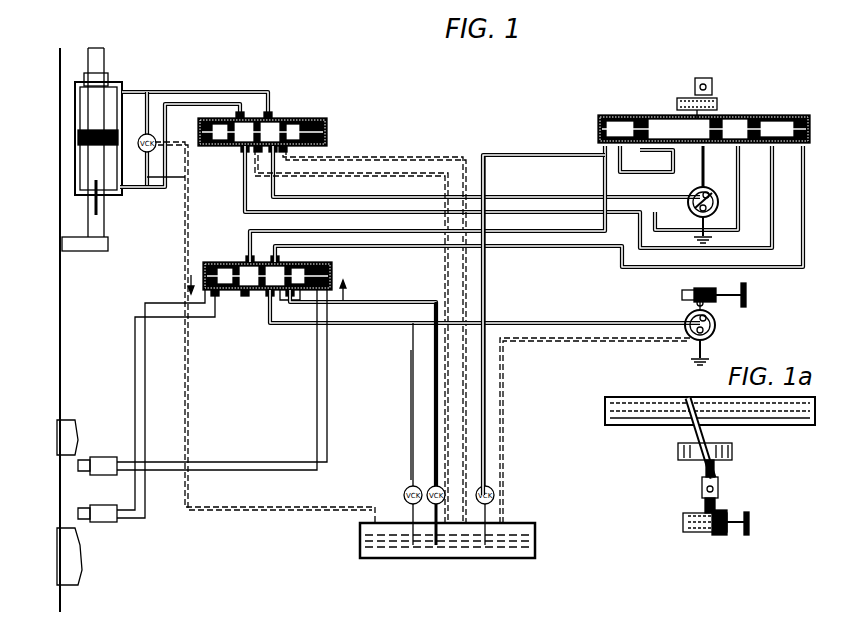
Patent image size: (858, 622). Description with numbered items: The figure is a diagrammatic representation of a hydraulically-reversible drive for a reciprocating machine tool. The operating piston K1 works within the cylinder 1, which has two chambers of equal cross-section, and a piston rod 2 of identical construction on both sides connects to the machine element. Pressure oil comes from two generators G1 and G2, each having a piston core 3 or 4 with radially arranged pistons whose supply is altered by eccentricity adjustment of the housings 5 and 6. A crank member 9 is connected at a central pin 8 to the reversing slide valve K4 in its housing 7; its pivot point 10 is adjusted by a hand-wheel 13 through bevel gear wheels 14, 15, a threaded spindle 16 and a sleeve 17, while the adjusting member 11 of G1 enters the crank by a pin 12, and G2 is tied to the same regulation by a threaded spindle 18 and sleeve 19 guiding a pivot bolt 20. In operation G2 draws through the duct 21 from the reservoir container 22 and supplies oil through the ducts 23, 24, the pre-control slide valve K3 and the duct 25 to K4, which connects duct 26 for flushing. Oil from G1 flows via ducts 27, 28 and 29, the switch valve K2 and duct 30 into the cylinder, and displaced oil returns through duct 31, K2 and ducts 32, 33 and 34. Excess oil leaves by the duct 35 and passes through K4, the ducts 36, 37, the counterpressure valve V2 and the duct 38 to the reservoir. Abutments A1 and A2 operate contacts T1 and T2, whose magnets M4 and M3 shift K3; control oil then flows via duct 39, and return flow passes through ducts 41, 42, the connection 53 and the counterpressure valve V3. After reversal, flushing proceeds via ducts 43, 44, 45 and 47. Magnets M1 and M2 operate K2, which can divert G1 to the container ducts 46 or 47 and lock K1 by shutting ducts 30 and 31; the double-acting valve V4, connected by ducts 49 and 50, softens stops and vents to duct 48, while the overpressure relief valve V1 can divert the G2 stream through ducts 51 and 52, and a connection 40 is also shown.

In FIG. 1, the cylinder 1 is at (112, 195).
In FIG. 1, the piston rod 2 is at (104, 60).
In FIG. 1, the piston core 3 is at (712, 196).
In FIG. 1, the piston core 4 is at (716, 325).
In FIG. 1, the generator housing 5 is at (715, 208).
In FIG. 1, the generator housing 6 is at (712, 335).
In FIG. 1, the valve housing 7 is at (790, 118).
In FIG. 1A, the valve housing 7 is at (800, 425).
In FIG. 1, the central pin 8 is at (677, 100).
In FIG. 1A, the central pin 8 is at (690, 402).
In FIG. 1, the crank member 9 is at (718, 105).
In FIG. 1A, the crank member 9 is at (696, 430).
In FIG. 1A, the pivot point 10 is at (718, 488).
In FIG. 1A, the adjusting member 11 is at (732, 452).
In FIG. 1A, the pin 12 is at (712, 442).
In FIG. 1, the hand-wheel 13 is at (746, 294).
In FIG. 1A, the hand-wheel 13 is at (749, 518).
In FIG. 1, the bevel gear wheel 14 is at (726, 300).
In FIG. 1A, the bevel gear wheel 14 is at (733, 532).
In FIG. 1, the bevel gear wheel 15 is at (716, 290).
In FIG. 1A, the bevel gear wheel 15 is at (705, 507).
In FIG. 1, the threaded spindle 16 is at (700, 78).
In FIG. 1A, the threaded spindle 16 is at (714, 469).
In FIG. 1, the sleeve 17 is at (712, 85).
In FIG. 1A, the sleeve 17 is at (702, 482).
In FIG. 1, the threaded spindle 18 is at (684, 293).
In FIG. 1A, the threaded spindle 18 is at (690, 532).
In FIG. 1, the sleeve 19 is at (692, 290).
In FIG. 1A, the sleeve 19 is at (706, 532).
In FIG. 1, the pivot bolt 20 is at (696, 303).
In FIG. 1, the duct 21 is at (508, 340).
In FIG. 1, the reservoir container 22 is at (535, 540).
In FIG. 1, the duct 23 is at (413, 327).
In FIG. 1, the duct 24 is at (268, 300).
In FIG. 1, the duct 25 is at (275, 250).
In FIG. 1, the duct 26 is at (645, 216).
In FIG. 1, the duct 27 is at (660, 172).
In FIG. 1, the duct 28 is at (600, 197).
In FIG. 1, the duct 29 is at (285, 178).
In FIG. 1, the duct 30 is at (150, 92).
In FIG. 1, the duct 31 is at (165, 190).
In FIG. 1, the duct 32 is at (245, 160).
In FIG. 1, the duct 33 is at (622, 250).
In FIG. 1, the duct 34 is at (696, 202).
In FIG. 1, the duct 35 is at (738, 158).
In FIG. 1, the duct 36 is at (738, 172).
In FIG. 1, the duct 37 is at (545, 152).
In FIG. 1, the duct 38 is at (483, 540).
In FIG. 1, the duct 39 is at (250, 238).
In FIG. 1, the pipe line 40 is at (300, 300).
In FIG. 1, the duct 41 is at (375, 302).
In FIG. 1, the duct 42 is at (434, 540).
In FIG. 1, the duct 43 is at (616, 118).
In FIG. 1, the duct 44 is at (612, 152).
In FIG. 1, the duct 45 is at (714, 166).
In FIG. 1, the container duct 46 is at (322, 160).
In FIG. 1, the container duct 47 is at (258, 178).
In FIG. 1, the duct 48 is at (185, 146).
In FIG. 1, the duct 49 is at (150, 100).
In FIG. 1, the duct 50 is at (176, 178).
In FIG. 1, the duct 51 is at (411, 462).
In FIG. 1, the duct 52 is at (410, 540).
In FIG. 1, the connection 53 is at (228, 300).
In FIG. 1, the operating piston K1 is at (76, 139).
In FIG. 1, the switch valve K2 is at (286, 118).
In FIG. 1, the pre-control slide valve K3 is at (228, 290).
In FIG. 1, the reversing slide valve K4 is at (660, 118).
In FIG. 1, the magnet M1 is at (198, 124).
In FIG. 1, the magnet M2 is at (327, 124).
In FIG. 1, the magnet M3 is at (203, 265).
In FIG. 1, the magnet M4 is at (327, 266).
In FIG. 1, the overpressure relief valve V1 is at (404, 495).
In FIG. 1, the counterpressure valve V2 is at (494, 488).
In FIG. 1, the counterpressure valve V3 is at (434, 486).
In FIG. 1, the double-acting valve V4 is at (144, 135).
In FIG. 1, the generator G1 is at (693, 217).
In FIG. 1A, the generator G1 is at (678, 455).
In FIG. 1, the generator G2 is at (689, 337).
In FIG. 1A, the generator G2 is at (683, 523).
In FIG. 1, the contact T1 is at (104, 457).
In FIG. 1, the contact arrangement T2 is at (104, 505).
In FIG. 1, the abutment A1 is at (57, 430).
In FIG. 1, the abutment A2 is at (57, 550).